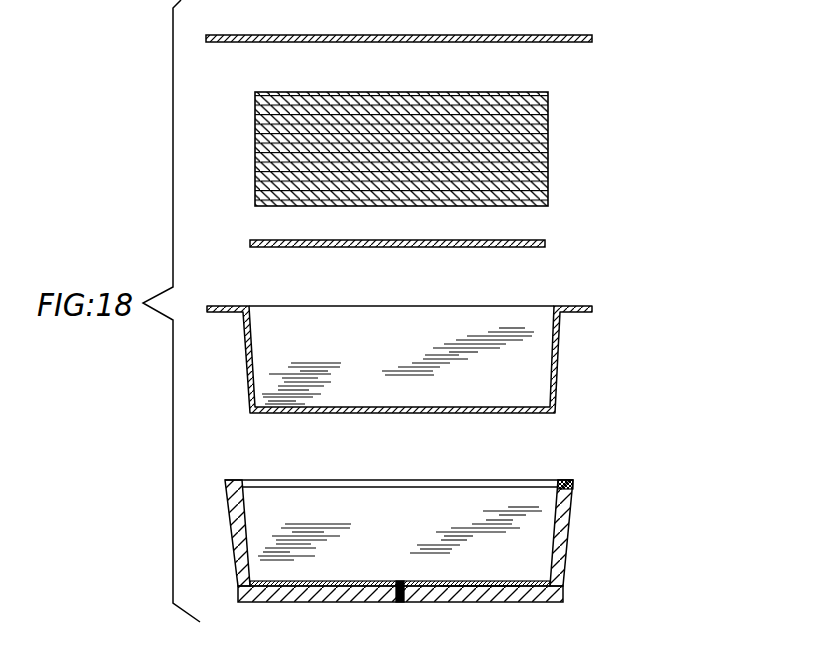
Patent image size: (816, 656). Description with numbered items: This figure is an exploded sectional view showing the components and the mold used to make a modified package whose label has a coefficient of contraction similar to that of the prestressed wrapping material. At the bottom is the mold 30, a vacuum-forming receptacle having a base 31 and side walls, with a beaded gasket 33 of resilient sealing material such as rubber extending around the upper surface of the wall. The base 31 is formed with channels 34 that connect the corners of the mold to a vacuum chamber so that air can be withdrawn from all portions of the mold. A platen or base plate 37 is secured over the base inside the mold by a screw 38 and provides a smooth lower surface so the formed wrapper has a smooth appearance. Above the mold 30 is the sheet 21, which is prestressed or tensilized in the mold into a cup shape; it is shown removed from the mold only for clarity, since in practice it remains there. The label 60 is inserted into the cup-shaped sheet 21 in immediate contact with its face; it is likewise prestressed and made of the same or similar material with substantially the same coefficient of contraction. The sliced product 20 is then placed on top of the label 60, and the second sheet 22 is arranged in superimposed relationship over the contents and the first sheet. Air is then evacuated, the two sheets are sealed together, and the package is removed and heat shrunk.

The second sheet 22 is at (555, 38).
The sliced product 20 is at (527, 100).
The label 60 is at (515, 241).
The sheet 21 is at (250, 392).
The mold 30 is at (572, 565).
The base 31 is at (270, 591).
The beaded gasket 33 is at (575, 483).
The channels 34 is at (360, 588).
The base plate 37 is at (488, 590).
The screw 38 is at (398, 602).